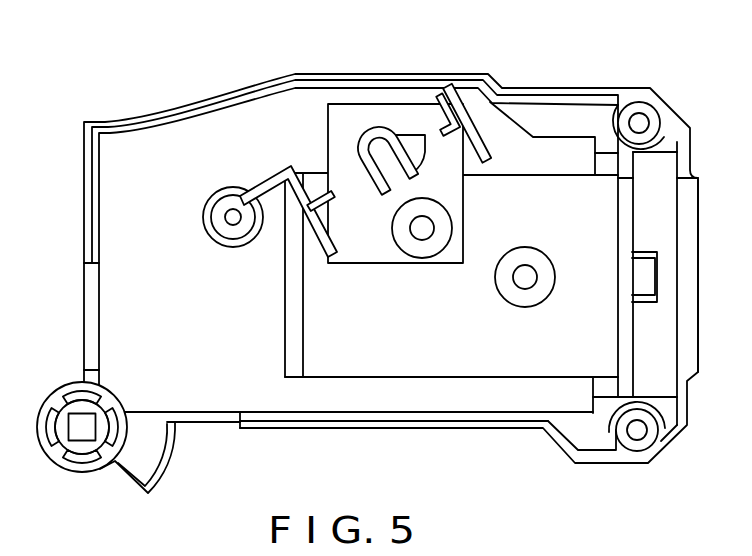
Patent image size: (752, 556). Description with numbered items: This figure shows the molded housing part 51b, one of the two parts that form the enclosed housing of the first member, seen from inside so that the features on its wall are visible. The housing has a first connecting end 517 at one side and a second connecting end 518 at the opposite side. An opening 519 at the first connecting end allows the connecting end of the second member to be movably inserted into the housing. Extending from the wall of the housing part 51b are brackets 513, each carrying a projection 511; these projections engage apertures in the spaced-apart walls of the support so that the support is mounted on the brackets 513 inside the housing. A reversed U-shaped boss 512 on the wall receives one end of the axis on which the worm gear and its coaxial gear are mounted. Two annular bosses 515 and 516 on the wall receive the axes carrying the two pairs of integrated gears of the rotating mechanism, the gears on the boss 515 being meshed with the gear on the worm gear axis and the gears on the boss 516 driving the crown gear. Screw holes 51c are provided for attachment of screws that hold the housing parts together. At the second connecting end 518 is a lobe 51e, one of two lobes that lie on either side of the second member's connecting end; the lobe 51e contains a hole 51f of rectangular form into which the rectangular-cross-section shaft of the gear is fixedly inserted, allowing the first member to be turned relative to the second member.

The housing part 51b is at (228, 117).
The screw holes 51c is at (220, 202).
The lobe 51e is at (97, 471).
The hole 51f is at (82, 420).
The projection 511 is at (309, 208).
The reversed U-shaped boss 512 is at (377, 128).
The bracket 513 is at (267, 183).
The annular boss 515 is at (412, 248).
The annular boss 516 is at (525, 307).
The first connecting end 517 is at (703, 375).
The second connecting end 518 is at (84, 234).
The opening 519 is at (684, 245).